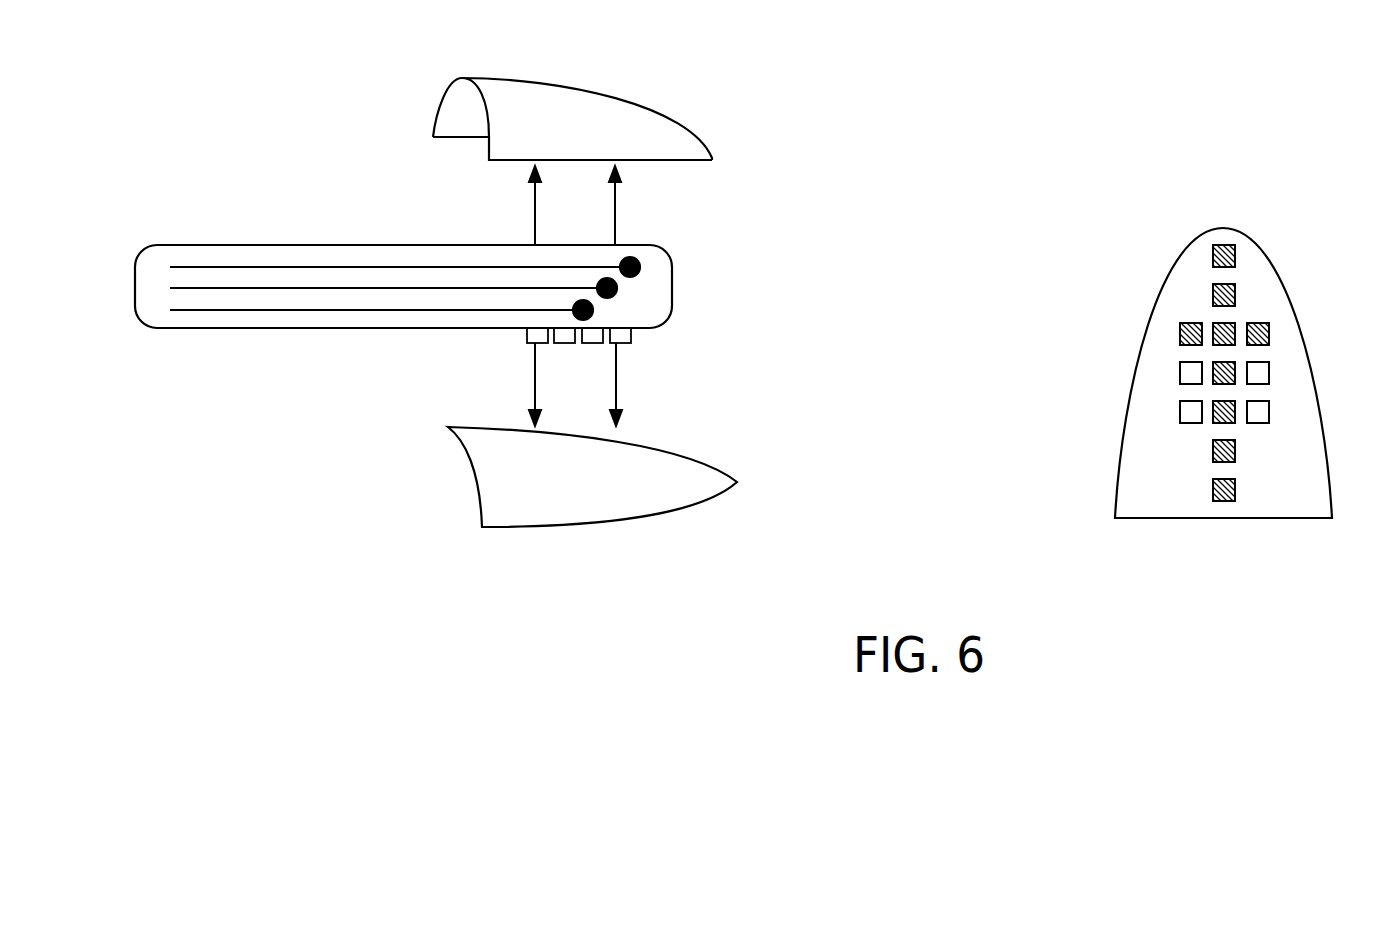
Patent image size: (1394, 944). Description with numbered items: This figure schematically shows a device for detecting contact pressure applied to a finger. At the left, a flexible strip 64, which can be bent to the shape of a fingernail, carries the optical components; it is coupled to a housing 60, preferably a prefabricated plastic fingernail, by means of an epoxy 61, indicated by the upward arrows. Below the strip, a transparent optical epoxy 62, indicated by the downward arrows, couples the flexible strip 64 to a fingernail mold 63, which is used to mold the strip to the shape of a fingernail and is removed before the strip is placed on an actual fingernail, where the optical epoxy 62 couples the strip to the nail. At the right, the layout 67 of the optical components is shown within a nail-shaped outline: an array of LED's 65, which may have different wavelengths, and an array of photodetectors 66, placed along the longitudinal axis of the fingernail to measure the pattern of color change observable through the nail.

The housing 60 is at (448, 88).
The epoxy 61 is at (615, 207).
The optical epoxy 62 is at (533, 380).
The fingernail mold 63 is at (722, 490).
The flexible strip 64 is at (672, 287).
The array of LED's 65 is at (1270, 377).
The array of photodetectors 66 is at (1227, 245).
The layout of the optical components 67 is at (1313, 510).